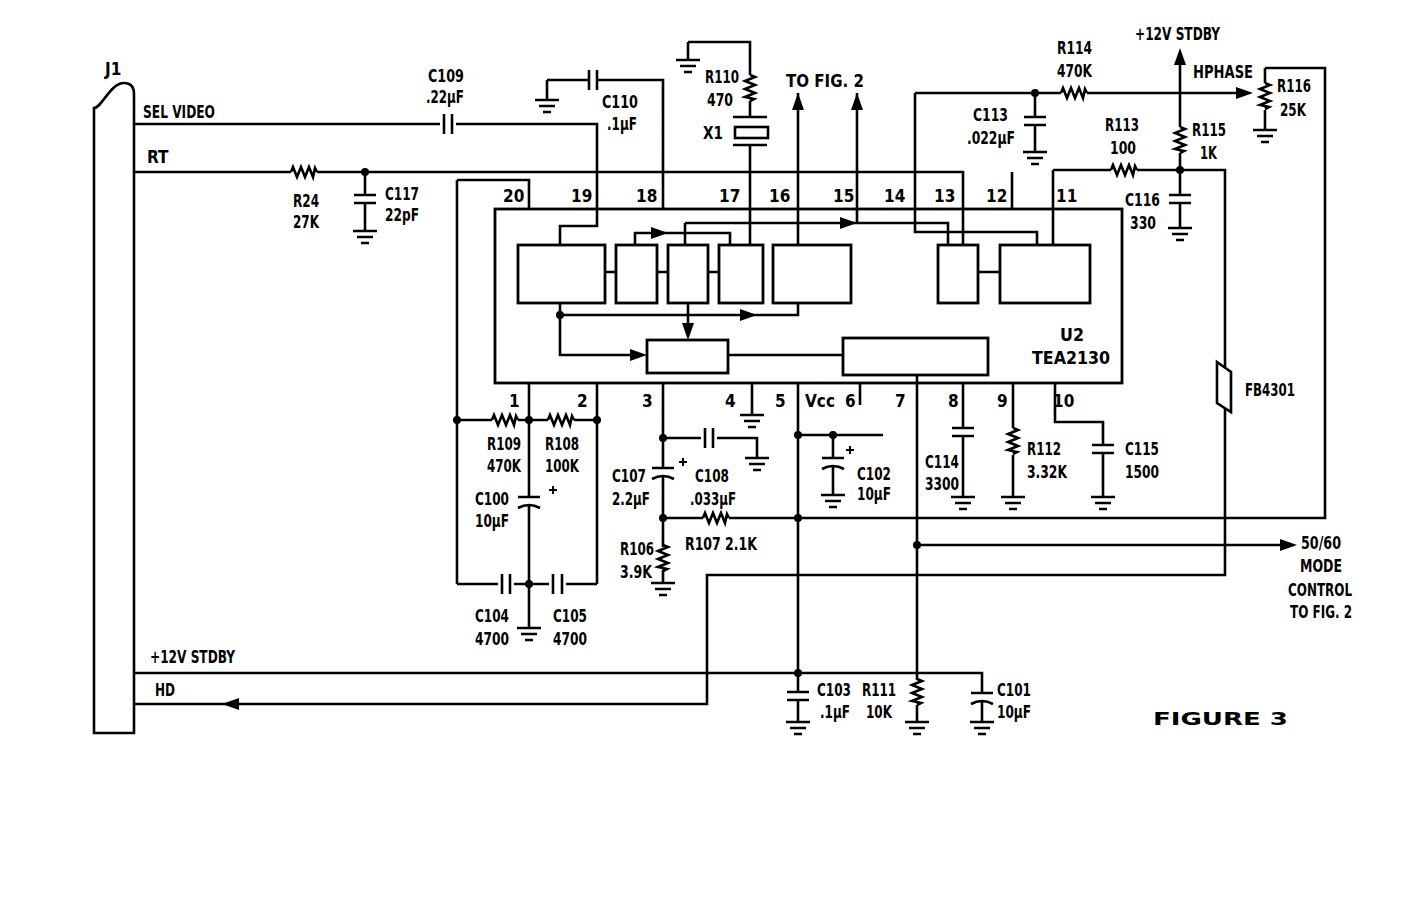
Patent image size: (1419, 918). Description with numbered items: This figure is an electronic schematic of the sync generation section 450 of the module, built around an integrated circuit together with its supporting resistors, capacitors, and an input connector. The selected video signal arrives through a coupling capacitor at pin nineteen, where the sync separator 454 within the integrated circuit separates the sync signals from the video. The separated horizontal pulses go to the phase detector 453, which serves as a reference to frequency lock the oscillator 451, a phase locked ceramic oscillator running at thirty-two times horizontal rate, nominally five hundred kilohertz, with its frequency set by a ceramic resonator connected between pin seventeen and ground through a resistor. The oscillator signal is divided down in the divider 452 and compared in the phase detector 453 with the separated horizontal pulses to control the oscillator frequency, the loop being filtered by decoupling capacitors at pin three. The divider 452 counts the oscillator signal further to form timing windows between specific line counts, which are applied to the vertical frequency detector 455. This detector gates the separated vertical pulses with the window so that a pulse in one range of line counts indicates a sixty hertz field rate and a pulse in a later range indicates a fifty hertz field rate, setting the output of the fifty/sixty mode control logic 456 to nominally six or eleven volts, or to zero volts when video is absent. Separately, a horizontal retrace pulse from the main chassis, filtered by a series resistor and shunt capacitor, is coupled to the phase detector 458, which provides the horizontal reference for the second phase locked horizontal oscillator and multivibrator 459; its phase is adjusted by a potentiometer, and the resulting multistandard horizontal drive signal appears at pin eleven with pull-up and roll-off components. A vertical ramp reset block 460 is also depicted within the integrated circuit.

The sync generation section 450 is at (287, 397).
The oscillator 451 is at (755, 291).
The divider 452 is at (702, 291).
The phase detector 453 is at (650, 291).
The sync separator 454 is at (574, 291).
The vertical frequency detector 455 is at (717, 365).
The 50/60 mode control logic 456 is at (980, 366).
The phase detector 458 is at (972, 291).
The multivibrator 459 is at (1059, 291).
The vertical reset circuit 460 is at (826, 291).